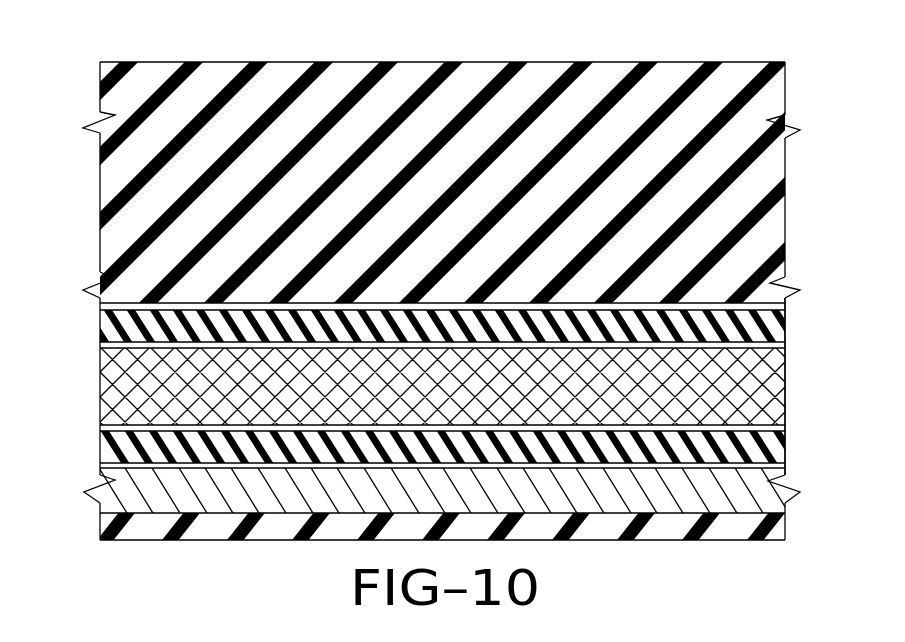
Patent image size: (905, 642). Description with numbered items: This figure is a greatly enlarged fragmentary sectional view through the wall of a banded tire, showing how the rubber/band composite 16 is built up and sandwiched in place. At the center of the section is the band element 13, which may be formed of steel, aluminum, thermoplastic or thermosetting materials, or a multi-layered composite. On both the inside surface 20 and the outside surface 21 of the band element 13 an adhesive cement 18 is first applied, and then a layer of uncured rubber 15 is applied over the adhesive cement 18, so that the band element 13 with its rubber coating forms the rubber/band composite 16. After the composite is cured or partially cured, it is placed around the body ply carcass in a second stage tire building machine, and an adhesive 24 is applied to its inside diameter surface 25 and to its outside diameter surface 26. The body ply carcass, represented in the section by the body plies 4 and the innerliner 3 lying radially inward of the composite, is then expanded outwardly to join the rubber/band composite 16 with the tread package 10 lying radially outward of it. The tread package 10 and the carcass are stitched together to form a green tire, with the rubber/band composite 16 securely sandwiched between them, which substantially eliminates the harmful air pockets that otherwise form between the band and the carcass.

The tread package 10 is at (613, 70).
The uncured rubber 15 is at (773, 328).
The band element 13 is at (775, 370).
The rubber/band composite 16 is at (790, 401).
The adhesive cement 18 is at (117, 342).
The outside surface 21 is at (182, 347).
The adhesive 24 is at (190, 306).
The inside diameter surface 25 is at (272, 465).
The outside diameter surface 26 is at (255, 308).
The inside surface 20 is at (180, 425).
The body plies 4 is at (163, 495).
The innerliner 3 is at (725, 530).